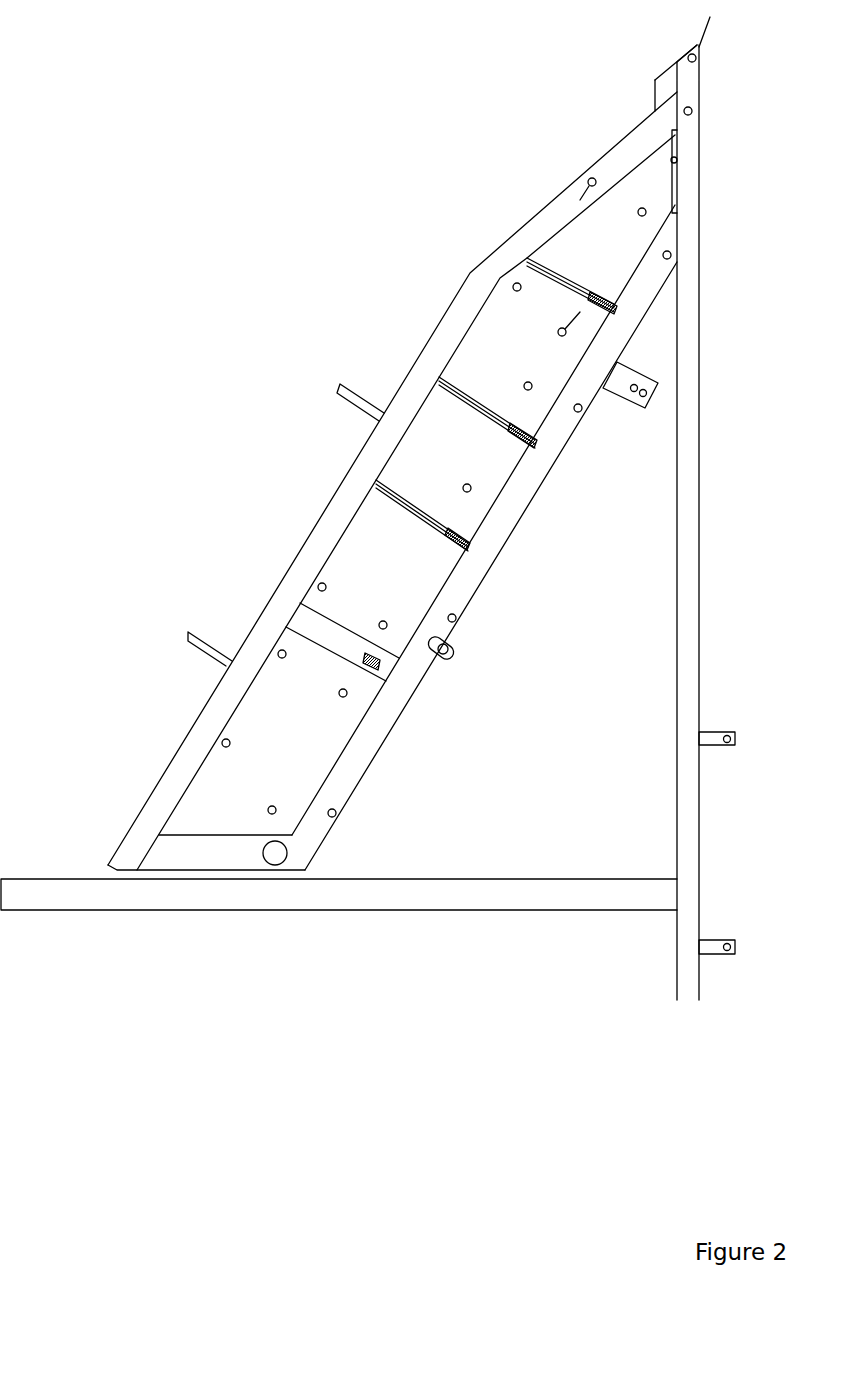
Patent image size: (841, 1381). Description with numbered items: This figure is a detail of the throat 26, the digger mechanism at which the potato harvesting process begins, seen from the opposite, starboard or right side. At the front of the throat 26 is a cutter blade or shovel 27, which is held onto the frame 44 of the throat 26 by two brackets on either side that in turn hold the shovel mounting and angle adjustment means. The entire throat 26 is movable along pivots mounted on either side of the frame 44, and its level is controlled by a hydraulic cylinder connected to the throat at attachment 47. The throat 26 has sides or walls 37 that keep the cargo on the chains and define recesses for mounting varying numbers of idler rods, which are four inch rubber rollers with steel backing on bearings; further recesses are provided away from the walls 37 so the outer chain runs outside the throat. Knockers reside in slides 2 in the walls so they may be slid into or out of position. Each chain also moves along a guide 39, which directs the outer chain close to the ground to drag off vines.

The slides 2 is at (617, 305).
The throat 26 is at (277, 866).
The cutter blade or shovel 27 is at (707, 35).
The sides or walls 37 is at (275, 704).
The guide 39 is at (720, 943).
The frame 44 is at (692, 193).
The attachment 47 is at (453, 648).